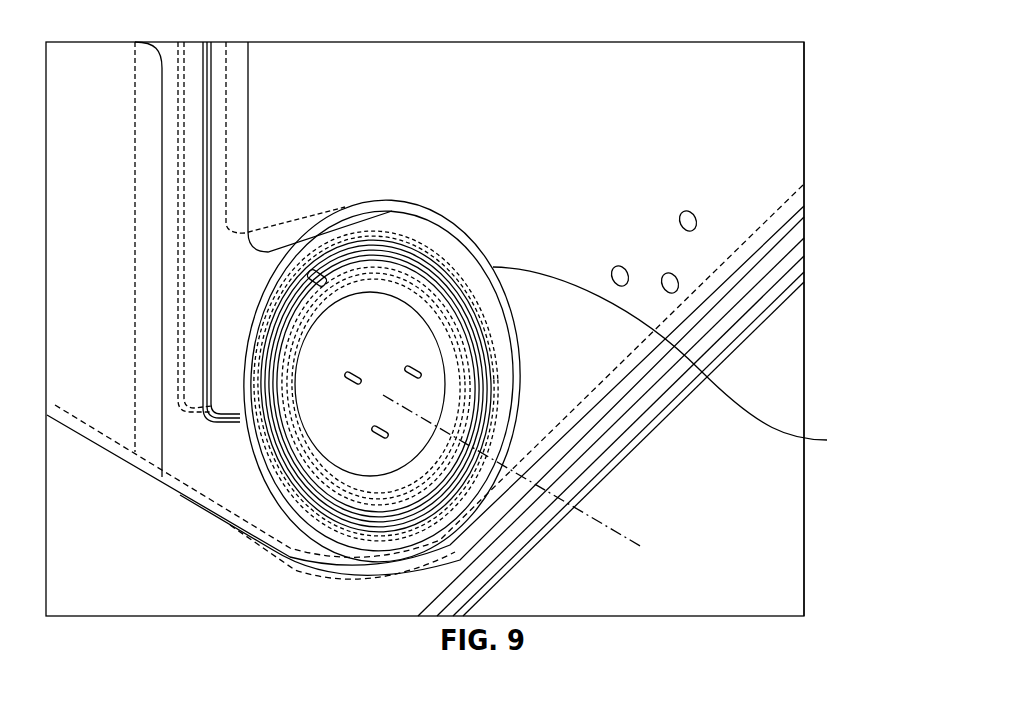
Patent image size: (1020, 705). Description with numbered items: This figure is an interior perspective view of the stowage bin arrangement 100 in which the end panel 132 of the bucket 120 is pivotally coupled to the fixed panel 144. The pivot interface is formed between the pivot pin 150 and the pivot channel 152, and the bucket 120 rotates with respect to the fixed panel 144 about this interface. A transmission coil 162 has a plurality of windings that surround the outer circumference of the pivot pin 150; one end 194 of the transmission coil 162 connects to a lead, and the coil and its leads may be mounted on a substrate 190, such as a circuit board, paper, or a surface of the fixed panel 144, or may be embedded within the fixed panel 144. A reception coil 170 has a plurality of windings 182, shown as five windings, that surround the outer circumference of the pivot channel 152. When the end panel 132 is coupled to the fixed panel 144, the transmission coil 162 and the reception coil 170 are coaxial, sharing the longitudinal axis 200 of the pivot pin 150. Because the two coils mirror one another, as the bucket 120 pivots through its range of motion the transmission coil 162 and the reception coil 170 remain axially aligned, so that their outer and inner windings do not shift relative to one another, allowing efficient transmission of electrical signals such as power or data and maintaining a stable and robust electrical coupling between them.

The seat belt retractor assembly 100 is at (727, 33).
The bucket 120 is at (618, 90).
The end panel 132 is at (790, 78).
The fixed panel 144 is at (186, 600).
The pivot pin 150 is at (383, 317).
The pivot channel 152 is at (333, 523).
The transmission coil 162 is at (342, 240).
The reception coil 170 is at (483, 263).
The windings 182 is at (686, 360).
The substrate 190 is at (285, 220).
The end of transmission coil 194 is at (187, 238).
The longitudinal axis 200 is at (600, 522).